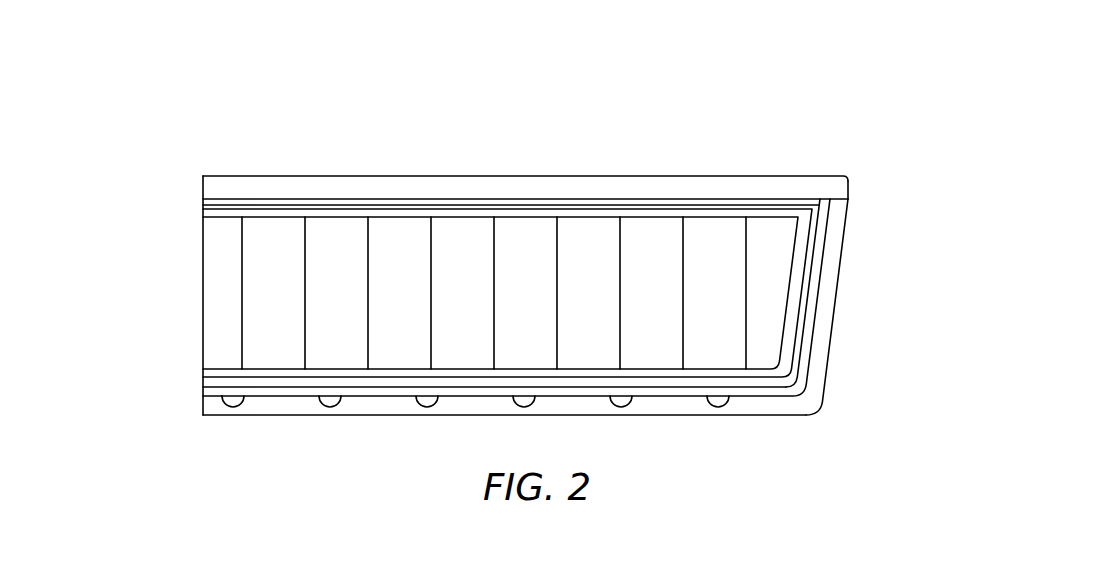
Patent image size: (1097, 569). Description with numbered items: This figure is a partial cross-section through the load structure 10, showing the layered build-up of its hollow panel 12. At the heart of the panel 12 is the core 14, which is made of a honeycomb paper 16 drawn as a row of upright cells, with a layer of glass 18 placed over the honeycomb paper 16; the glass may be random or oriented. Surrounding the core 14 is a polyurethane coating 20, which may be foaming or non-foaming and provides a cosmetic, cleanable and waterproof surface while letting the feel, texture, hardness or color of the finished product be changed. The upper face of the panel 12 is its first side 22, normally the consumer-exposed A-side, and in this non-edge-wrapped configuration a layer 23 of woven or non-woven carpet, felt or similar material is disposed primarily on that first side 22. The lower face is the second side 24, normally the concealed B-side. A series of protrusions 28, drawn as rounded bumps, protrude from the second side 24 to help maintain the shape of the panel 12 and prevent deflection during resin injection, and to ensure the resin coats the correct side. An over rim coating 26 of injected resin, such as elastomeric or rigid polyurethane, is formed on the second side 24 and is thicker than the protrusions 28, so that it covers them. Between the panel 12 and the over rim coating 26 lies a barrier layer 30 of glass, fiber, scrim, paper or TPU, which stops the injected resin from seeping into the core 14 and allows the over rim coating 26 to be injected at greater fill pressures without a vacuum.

The load structure 10 is at (308, 88).
The panel 12 is at (863, 255).
The core 14 is at (135, 265).
The honeycomb paper 16 is at (260, 258).
The layer of glass 18 is at (212, 210).
The polyurethane coating 20 is at (245, 203).
The first side 22 is at (495, 165).
The layer 23 is at (310, 188).
The second side 24 is at (617, 422).
The over rim coating 26 is at (297, 408).
The protrusions 28 is at (425, 402).
The barrier layer 30 is at (220, 395).